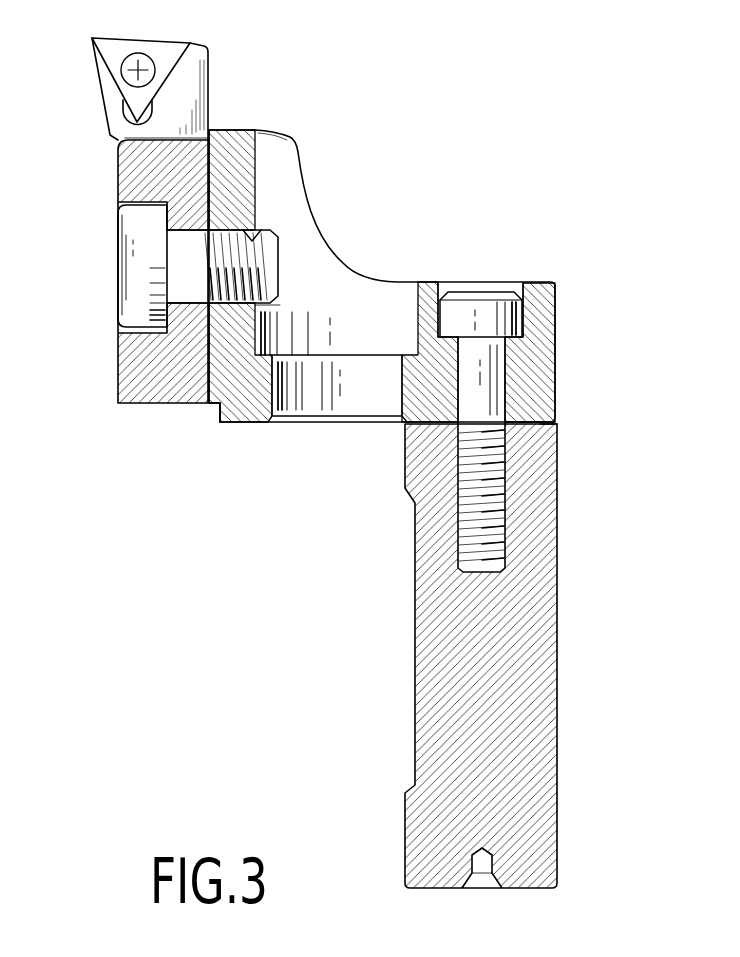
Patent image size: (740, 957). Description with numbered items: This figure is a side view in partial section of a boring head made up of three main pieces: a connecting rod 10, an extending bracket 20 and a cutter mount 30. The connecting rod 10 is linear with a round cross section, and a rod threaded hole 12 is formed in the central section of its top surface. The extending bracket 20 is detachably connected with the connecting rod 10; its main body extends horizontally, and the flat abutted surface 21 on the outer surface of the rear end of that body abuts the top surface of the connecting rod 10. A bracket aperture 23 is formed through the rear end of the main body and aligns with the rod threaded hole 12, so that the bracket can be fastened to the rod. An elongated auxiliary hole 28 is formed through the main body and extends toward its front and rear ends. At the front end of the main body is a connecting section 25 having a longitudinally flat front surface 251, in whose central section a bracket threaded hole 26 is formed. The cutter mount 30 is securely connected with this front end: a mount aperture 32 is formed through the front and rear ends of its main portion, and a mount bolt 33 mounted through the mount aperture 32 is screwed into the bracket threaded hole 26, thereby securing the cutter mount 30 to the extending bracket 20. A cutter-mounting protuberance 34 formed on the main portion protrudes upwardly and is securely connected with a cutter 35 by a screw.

The connecting rod 10 is at (575, 541).
The rod threaded hole 12 is at (462, 518).
The extending bracket 20 is at (580, 322).
The abutted surface 21 is at (530, 423).
The bracket aperture 23 is at (494, 373).
The connecting section 25 is at (232, 135).
The front surface 251 is at (208, 370).
The bracket threaded hole 26 is at (255, 234).
The auxiliary hole 28 is at (400, 378).
The cutter mount 30 is at (108, 172).
The mount aperture 32 is at (190, 242).
The mount bolt 33 is at (123, 258).
The cutter-mounting protuberance 34 is at (195, 68).
The cutter 35 is at (133, 100).